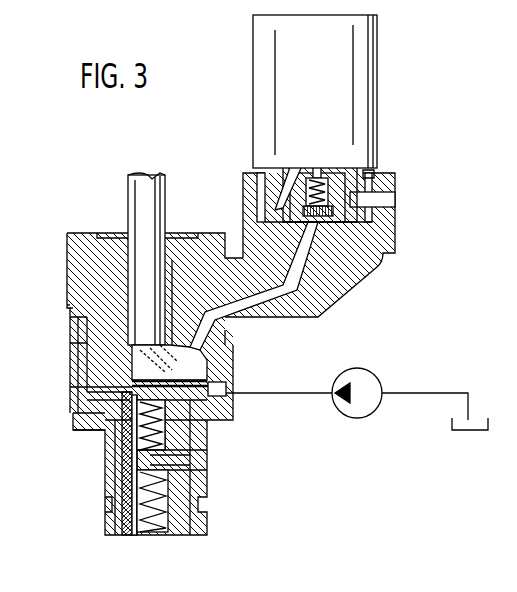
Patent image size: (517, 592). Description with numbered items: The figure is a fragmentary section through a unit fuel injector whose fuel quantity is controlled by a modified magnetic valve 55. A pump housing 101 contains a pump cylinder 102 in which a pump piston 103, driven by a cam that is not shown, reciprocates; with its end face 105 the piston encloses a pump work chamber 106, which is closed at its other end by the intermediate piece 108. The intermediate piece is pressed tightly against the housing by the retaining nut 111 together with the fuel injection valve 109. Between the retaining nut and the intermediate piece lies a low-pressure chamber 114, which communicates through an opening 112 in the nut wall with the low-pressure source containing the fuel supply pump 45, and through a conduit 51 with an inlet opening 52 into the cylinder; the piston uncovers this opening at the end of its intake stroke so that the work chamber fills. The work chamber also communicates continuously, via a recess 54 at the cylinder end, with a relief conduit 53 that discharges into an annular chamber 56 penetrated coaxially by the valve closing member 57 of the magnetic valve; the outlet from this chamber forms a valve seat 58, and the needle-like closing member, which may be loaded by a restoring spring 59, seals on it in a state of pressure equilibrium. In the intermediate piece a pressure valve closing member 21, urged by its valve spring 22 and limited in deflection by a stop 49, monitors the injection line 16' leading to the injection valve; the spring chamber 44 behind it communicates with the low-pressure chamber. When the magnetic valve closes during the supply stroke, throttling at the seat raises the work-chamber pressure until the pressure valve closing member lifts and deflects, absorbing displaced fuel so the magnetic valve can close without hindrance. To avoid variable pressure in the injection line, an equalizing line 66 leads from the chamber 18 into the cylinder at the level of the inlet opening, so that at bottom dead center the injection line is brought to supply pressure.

The pump housing 101 is at (87, 250).
The pump cylinder 102 is at (160, 240).
The pump piston 103 is at (137, 196).
The end face 105 is at (195, 352).
The pump work chamber 106 is at (68, 318).
The intermediate piece 108 is at (105, 402).
The fuel injection valve 109 is at (182, 535).
The retaining nut 111 is at (107, 523).
The opening 112 is at (232, 398).
The low-pressure chamber 114 is at (95, 391).
The injection line 16' is at (99, 463).
The chamber 18 is at (212, 418).
The pressure valve closing member 21 is at (75, 420).
The valve spring 22 is at (187, 462).
The spring chamber 44 is at (140, 432).
The fuel supply pump 45 is at (371, 414).
The stop 49 is at (140, 457).
The conduit 51 is at (195, 360).
The inlet opening 52 is at (150, 343).
The relief conduit 53 is at (362, 290).
The recess 54 is at (196, 378).
The magnetic valve 55 is at (372, 60).
The annular chamber 56 is at (348, 157).
The valve closing member 57 is at (315, 141).
The valve seat 58 is at (374, 173).
The restoring spring 59 is at (388, 193).
The equalizing line 66 is at (76, 345).